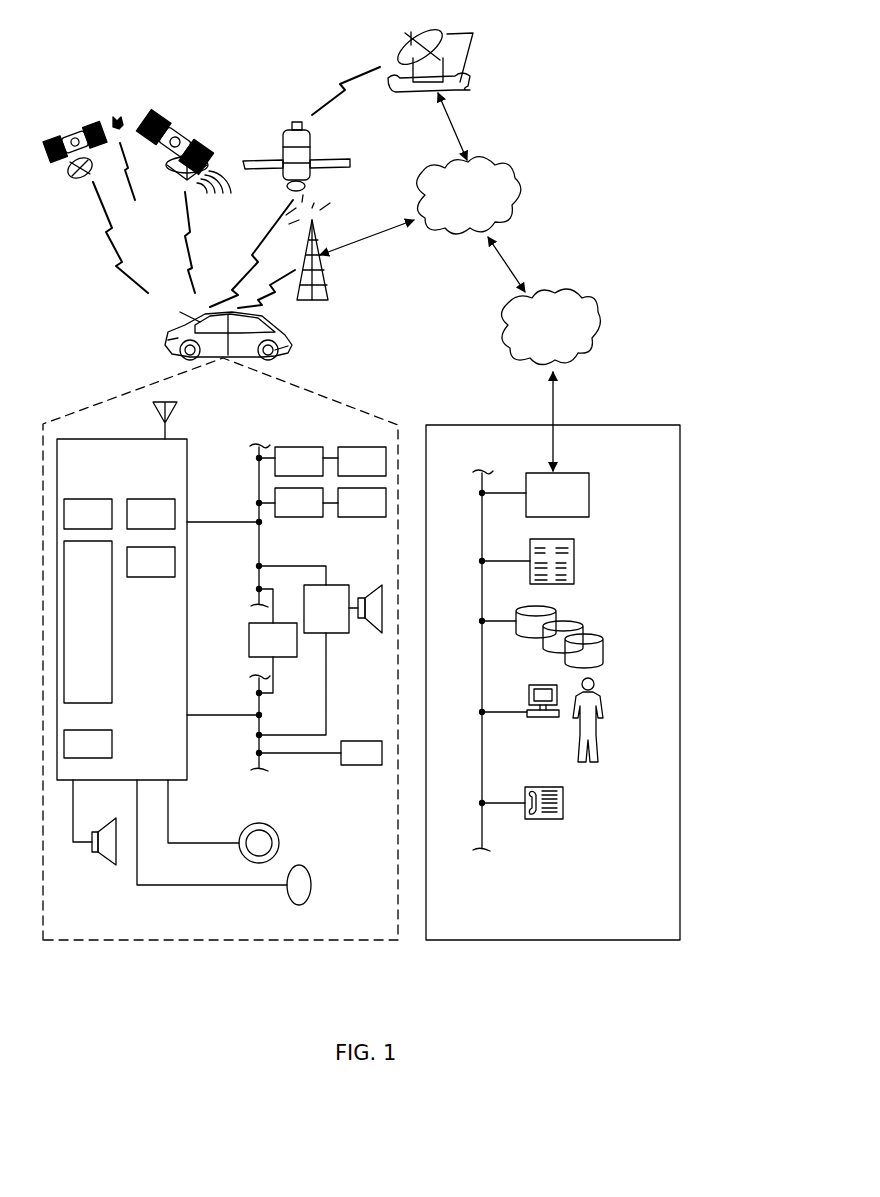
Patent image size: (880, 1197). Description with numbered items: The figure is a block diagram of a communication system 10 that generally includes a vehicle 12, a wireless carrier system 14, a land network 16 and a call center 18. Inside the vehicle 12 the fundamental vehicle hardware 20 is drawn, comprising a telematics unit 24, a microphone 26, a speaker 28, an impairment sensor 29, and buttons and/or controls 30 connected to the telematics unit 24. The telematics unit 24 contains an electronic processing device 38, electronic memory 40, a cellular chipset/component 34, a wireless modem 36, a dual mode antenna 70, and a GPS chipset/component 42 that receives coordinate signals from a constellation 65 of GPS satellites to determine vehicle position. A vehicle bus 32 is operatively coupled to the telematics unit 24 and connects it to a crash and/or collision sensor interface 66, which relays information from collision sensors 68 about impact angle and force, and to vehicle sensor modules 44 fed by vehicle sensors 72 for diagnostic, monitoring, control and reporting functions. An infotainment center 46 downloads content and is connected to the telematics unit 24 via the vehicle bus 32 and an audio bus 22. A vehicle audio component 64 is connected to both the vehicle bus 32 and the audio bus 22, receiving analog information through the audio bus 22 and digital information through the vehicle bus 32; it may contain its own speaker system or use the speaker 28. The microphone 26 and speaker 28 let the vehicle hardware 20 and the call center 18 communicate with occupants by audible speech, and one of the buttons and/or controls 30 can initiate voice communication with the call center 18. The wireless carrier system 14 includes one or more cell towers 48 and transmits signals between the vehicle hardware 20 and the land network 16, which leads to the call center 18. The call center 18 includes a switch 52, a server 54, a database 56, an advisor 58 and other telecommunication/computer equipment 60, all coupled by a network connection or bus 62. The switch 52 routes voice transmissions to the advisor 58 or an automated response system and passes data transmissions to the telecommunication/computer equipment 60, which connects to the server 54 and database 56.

The communication system 10 is at (73, 330).
The vehicle 12 is at (166, 342).
The wireless carrier system 14 is at (545, 182).
The land network 16 is at (518, 205).
The call center 18 is at (553, 943).
The vehicle hardware 20 is at (203, 943).
The audio bus 22 is at (250, 754).
The telematics unit 24 is at (188, 638).
The microphone 26 is at (302, 866).
The speaker 28 is at (110, 862).
The impairment sensor 29 is at (362, 740).
The buttons and/or controls 30 is at (267, 825).
The vehicle bus 32 is at (262, 537).
The cellular chipset/component 34 is at (88, 498).
The wireless modem 36 is at (151, 498).
The electronic processing device 38 is at (113, 620).
The electronic memory 40 is at (112, 742).
The GPS chipset/component 42 is at (176, 562).
The vehicle sensor modules 44 is at (315, 518).
The infotainment center 46 is at (248, 646).
The cell towers 48 is at (320, 242).
The switch 52 is at (590, 496).
The server 54 is at (575, 566).
The database 56 is at (603, 650).
The advisor 58 is at (603, 706).
The telecommunication/computer equipment 60 is at (565, 799).
The network connection or bus 62 is at (480, 643).
The vehicle audio component 64 is at (473, 33).
The constellation of GPS satellites 65 is at (48, 85).
The crash and/or collision sensor interface module 66 is at (290, 446).
The collision sensors 68 is at (352, 446).
The dual mode antenna 70 is at (170, 432).
The vehicle sensors 72 is at (380, 518).